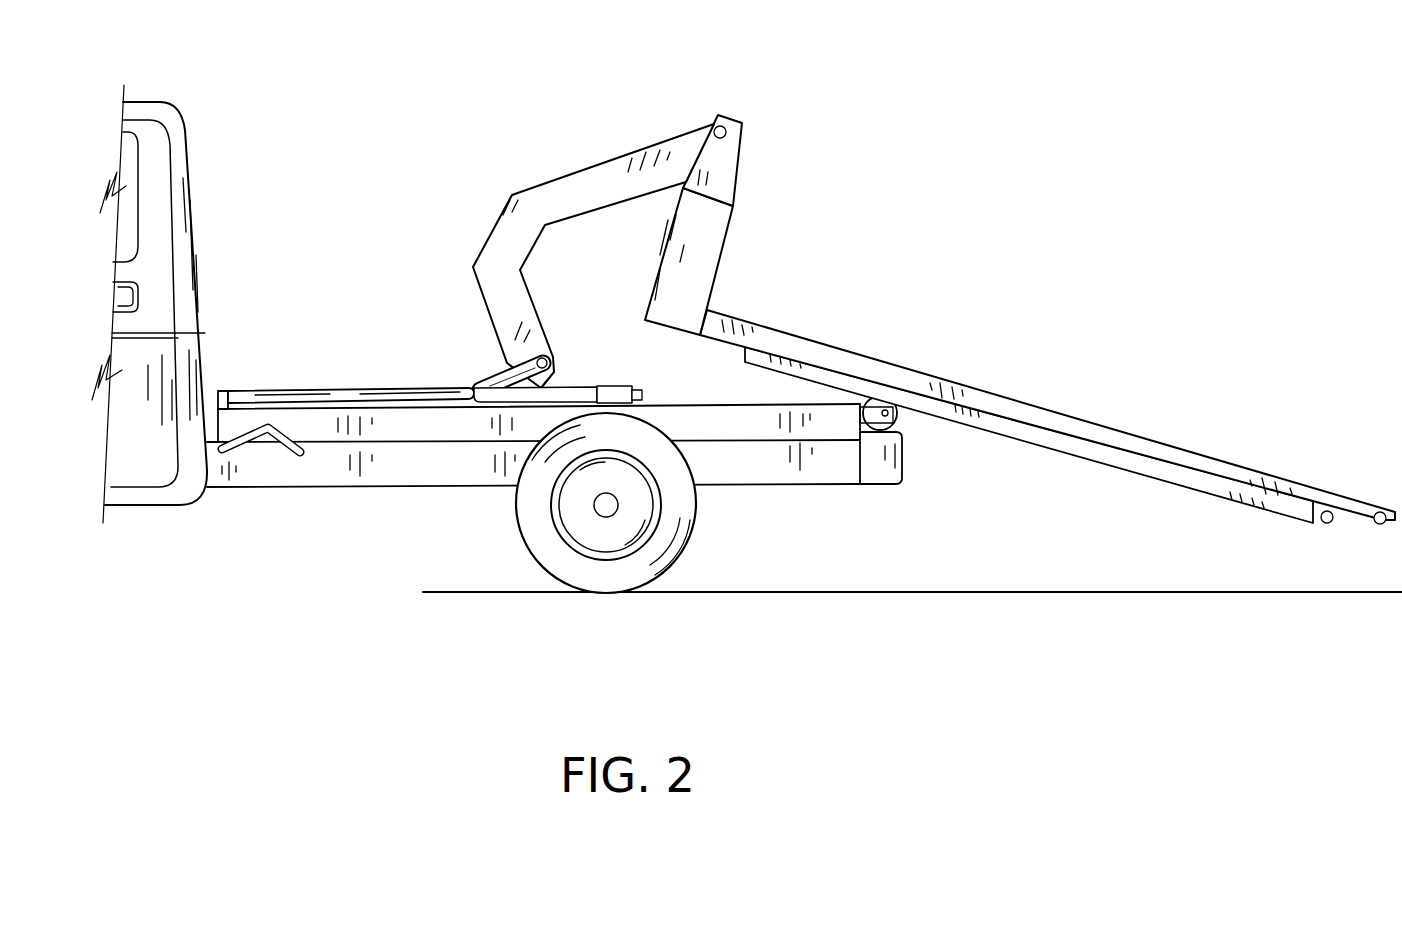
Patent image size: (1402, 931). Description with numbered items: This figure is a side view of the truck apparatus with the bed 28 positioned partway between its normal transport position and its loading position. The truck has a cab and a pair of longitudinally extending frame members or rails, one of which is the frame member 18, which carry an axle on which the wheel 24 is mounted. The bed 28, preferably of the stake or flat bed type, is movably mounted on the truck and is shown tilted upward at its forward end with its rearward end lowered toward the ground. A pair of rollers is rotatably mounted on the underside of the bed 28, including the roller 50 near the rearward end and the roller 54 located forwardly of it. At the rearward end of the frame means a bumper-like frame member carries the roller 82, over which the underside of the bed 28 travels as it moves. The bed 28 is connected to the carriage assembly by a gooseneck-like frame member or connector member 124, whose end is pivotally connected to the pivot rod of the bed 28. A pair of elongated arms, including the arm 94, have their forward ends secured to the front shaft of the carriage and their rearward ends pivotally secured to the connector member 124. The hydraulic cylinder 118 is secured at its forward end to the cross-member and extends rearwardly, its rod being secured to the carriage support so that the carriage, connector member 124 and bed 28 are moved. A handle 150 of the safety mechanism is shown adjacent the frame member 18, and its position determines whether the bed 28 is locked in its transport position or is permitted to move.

The frame member 18 is at (438, 475).
The wheel 24 is at (686, 533).
The bed 28 is at (1022, 395).
The roller 50 is at (1381, 525).
The roller 54 is at (1323, 522).
The roller 82 is at (897, 418).
The arm 94 is at (497, 377).
The hydraulic cylinder 118 is at (328, 388).
The gooseneck-like connector member 124 is at (497, 257).
The handle 150 is at (285, 453).